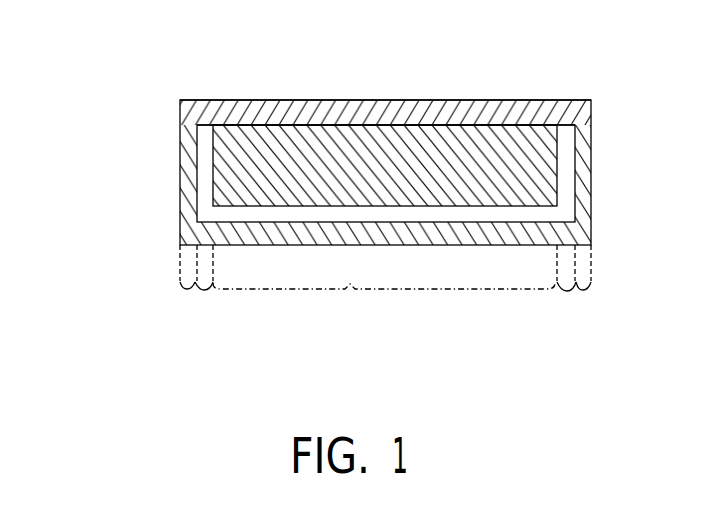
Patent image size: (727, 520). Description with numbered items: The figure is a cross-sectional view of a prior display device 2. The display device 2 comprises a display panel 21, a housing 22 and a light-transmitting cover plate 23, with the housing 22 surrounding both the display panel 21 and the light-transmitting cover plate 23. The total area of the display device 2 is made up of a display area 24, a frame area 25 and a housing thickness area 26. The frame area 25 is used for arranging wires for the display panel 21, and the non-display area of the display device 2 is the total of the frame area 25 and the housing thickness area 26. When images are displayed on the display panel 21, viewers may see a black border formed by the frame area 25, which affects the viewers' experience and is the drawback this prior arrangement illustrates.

The display device 2 is at (150, 83).
The display panel 21 is at (404, 150).
The housing 22 is at (588, 99).
The light-transmitting cover plate 23 is at (283, 115).
The display area 24 is at (385, 288).
The frame area 25 is at (387, 288).
The housing thickness area 26 is at (191, 300).